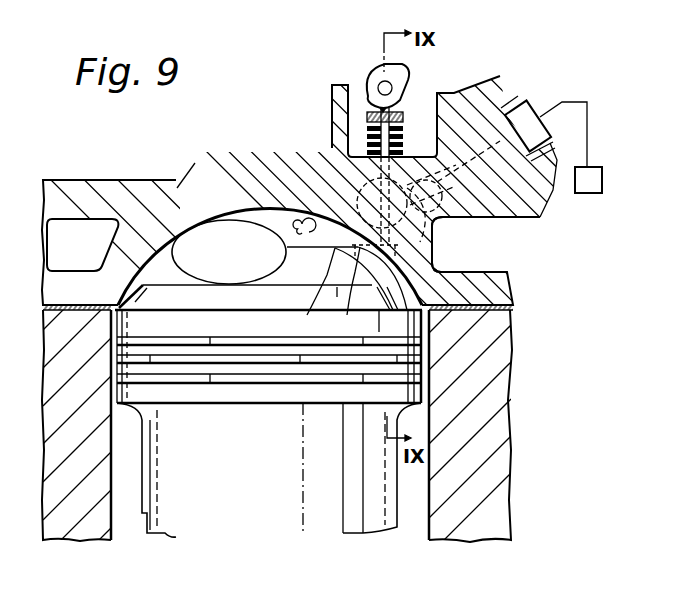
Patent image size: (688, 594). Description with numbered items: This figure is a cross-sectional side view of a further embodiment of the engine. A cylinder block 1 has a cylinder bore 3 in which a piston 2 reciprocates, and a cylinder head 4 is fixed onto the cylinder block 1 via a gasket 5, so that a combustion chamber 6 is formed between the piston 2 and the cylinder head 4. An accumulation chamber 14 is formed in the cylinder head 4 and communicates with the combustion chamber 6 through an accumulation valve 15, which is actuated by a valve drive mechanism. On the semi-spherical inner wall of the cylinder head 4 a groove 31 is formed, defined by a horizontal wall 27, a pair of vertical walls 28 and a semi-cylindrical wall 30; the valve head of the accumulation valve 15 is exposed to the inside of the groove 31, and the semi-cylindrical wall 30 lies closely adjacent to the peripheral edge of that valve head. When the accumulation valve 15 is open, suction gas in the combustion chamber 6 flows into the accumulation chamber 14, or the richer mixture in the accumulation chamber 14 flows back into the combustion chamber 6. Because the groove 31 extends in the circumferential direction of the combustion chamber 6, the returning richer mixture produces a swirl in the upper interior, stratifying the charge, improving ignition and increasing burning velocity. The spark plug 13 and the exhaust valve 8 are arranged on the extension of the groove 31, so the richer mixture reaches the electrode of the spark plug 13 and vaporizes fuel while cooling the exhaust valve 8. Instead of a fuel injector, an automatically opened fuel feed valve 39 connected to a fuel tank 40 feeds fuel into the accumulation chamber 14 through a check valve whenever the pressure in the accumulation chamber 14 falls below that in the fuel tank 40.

The cylinder block 1 is at (484, 537).
The piston 2 is at (358, 522).
The cylinder bore 3 is at (424, 478).
The cylinder head 4 is at (177, 188).
The gasket 5 is at (514, 309).
The combustion chamber 6 is at (316, 279).
The exhaust valve 8 is at (190, 248).
The spark plug 13 is at (303, 223).
The accumulation chamber 14 is at (443, 222).
The accumulation valve 15 is at (405, 140).
The horizontal wall 27 is at (313, 291).
The vertical wall 28 is at (348, 291).
The semi-cylindrical wall 30 is at (432, 253).
The groove 31 is at (393, 322).
The fuel feed valve 39 is at (525, 105).
The fuel tank 40 is at (588, 193).